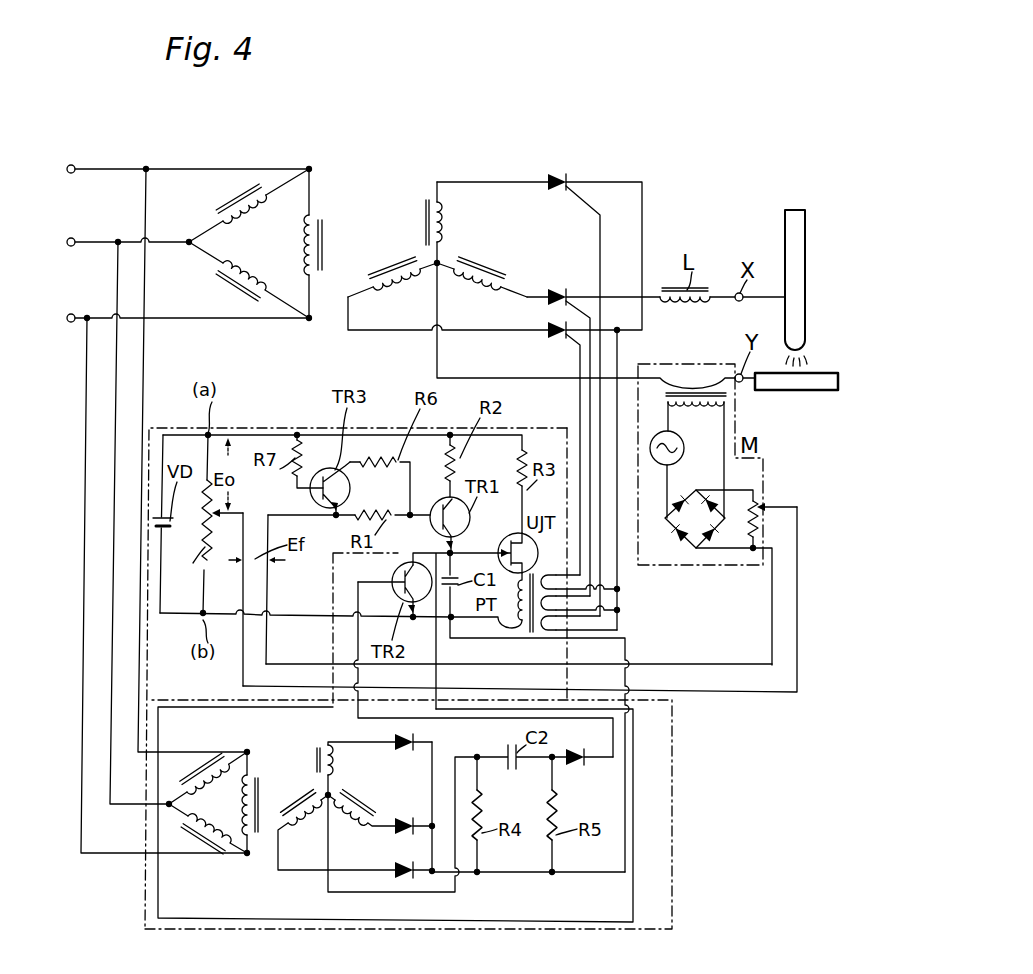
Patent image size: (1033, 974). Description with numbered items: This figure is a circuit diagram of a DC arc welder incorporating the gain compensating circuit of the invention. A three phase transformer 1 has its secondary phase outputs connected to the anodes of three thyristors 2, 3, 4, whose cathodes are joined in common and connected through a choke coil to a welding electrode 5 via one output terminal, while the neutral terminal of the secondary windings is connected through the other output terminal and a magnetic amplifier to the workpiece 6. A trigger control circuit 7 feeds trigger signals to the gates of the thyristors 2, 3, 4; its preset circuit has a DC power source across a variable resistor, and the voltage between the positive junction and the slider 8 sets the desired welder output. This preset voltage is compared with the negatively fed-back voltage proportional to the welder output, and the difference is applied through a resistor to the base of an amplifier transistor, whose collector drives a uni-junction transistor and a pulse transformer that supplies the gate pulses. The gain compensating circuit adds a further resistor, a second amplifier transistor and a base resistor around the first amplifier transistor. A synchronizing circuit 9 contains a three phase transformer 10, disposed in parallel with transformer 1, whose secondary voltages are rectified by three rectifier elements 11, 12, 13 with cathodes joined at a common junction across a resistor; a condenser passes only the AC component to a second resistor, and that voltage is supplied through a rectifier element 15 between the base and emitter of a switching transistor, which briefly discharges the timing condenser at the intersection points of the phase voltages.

The three phase transformer 1 is at (379, 211).
The thyristor 2 is at (561, 178).
The thyristor 3 is at (558, 293).
The thyristor 4 is at (547, 328).
The welding electrode 5 is at (807, 278).
The workpiece 6 is at (822, 372).
The trigger control circuit 7 is at (265, 427).
The slider 8 is at (217, 514).
The synchronizing circuit 9 is at (635, 795).
The three phase transformer 10 is at (251, 737).
The rectifier element 11 is at (413, 759).
The rectifier element 12 is at (407, 821).
The rectifier element 13 is at (391, 868).
The rectifier element 15 is at (582, 767).